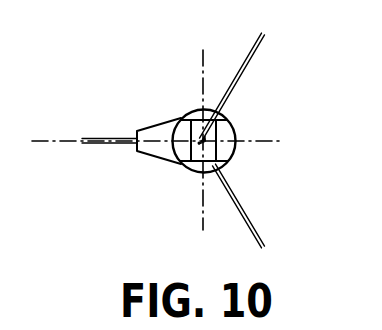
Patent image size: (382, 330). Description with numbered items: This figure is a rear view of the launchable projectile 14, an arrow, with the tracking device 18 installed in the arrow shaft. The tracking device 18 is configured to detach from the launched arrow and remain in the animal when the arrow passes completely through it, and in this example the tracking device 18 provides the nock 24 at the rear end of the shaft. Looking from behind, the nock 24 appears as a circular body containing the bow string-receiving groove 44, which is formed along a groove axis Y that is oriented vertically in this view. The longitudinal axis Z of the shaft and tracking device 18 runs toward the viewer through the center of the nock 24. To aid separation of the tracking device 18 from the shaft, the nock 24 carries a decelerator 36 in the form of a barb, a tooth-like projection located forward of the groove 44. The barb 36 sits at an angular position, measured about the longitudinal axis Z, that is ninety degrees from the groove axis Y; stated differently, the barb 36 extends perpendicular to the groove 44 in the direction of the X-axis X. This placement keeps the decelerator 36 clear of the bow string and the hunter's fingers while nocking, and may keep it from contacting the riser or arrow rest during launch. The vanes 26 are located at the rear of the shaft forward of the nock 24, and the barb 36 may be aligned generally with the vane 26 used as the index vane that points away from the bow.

The launchable projectile 14 is at (305, 75).
The tracking device 18 is at (240, 125).
The nock 24 is at (229, 163).
The vanes 26 is at (87, 137).
The decelerator 36 is at (142, 130).
The bow string-receiving groove 44 is at (227, 93).
The X-axis X is at (271, 137).
The groove axis Y is at (202, 78).
The longitudinal axis Z is at (188, 164).